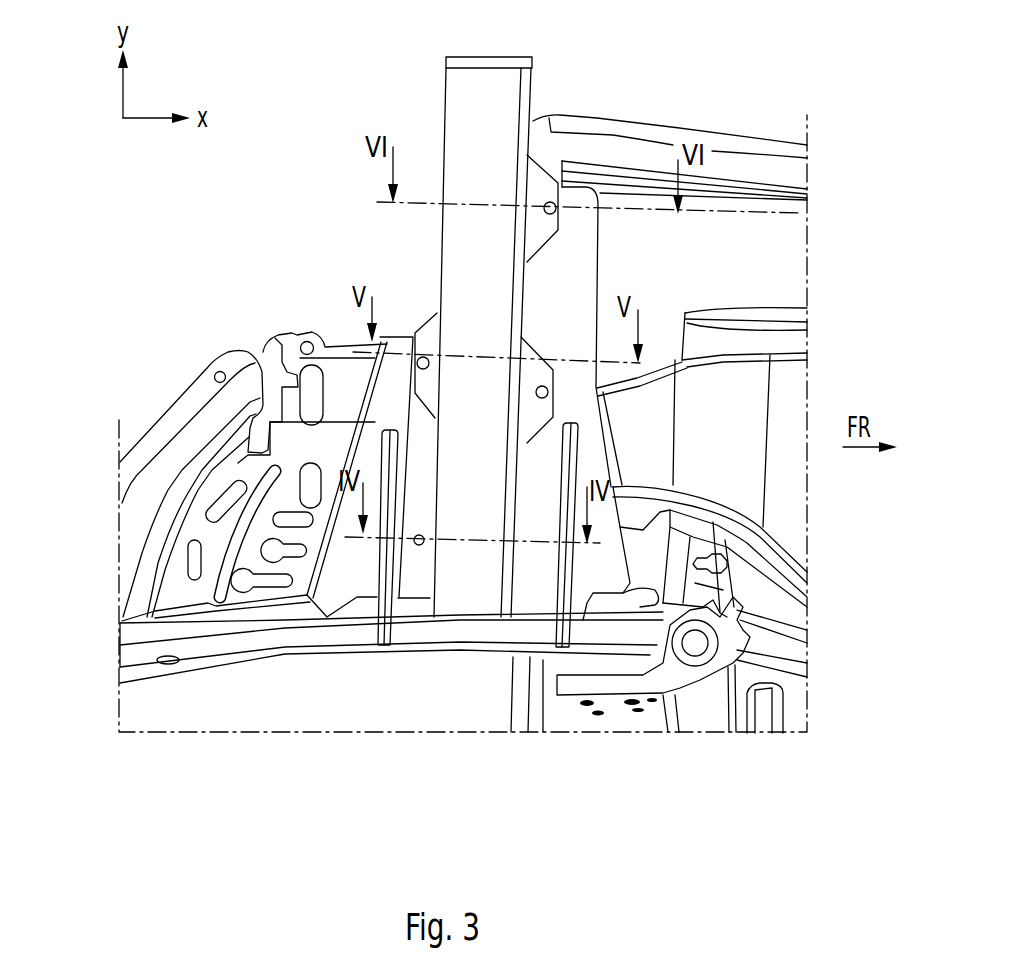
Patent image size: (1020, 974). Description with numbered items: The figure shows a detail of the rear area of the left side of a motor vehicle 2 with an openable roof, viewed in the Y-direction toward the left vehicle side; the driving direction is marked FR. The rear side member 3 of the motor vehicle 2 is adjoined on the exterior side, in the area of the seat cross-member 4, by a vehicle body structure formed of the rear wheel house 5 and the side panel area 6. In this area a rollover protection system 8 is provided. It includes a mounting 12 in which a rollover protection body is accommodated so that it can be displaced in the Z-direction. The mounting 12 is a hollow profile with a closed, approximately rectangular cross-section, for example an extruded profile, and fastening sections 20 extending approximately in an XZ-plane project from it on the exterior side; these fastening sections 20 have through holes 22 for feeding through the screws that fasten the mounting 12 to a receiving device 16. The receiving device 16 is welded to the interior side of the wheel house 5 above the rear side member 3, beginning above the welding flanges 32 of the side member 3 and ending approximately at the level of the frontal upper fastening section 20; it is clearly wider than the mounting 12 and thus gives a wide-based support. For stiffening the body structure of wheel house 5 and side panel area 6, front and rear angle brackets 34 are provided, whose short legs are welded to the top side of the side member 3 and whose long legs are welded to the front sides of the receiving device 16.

The motor vehicle 2 is at (80, 570).
The rear side member 3 is at (225, 707).
The seat cross-member 4 is at (615, 717).
The rear wheel house 5 is at (287, 442).
The side panel area 6 is at (790, 267).
The rollover protection system 8 is at (385, 228).
The mounting 12 is at (462, 95).
The receiving device 16 is at (330, 593).
The fastening section 20 is at (540, 232).
The through hole 22 is at (550, 202).
The welding flange 32 is at (253, 620).
The angle bracket 34 is at (382, 600).